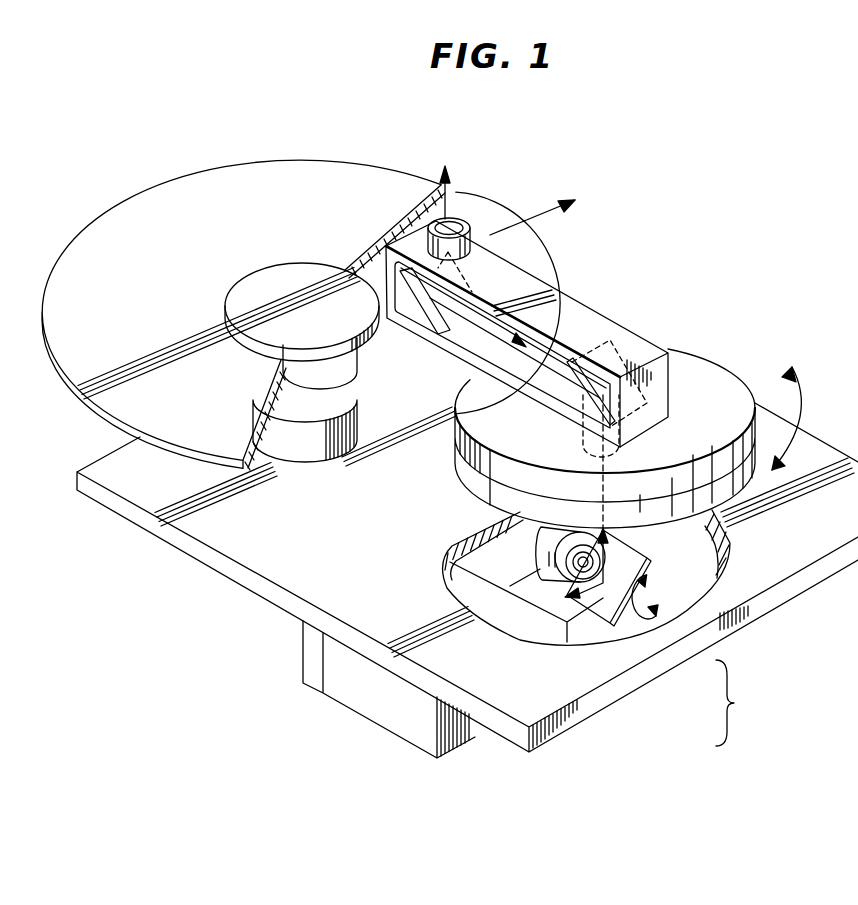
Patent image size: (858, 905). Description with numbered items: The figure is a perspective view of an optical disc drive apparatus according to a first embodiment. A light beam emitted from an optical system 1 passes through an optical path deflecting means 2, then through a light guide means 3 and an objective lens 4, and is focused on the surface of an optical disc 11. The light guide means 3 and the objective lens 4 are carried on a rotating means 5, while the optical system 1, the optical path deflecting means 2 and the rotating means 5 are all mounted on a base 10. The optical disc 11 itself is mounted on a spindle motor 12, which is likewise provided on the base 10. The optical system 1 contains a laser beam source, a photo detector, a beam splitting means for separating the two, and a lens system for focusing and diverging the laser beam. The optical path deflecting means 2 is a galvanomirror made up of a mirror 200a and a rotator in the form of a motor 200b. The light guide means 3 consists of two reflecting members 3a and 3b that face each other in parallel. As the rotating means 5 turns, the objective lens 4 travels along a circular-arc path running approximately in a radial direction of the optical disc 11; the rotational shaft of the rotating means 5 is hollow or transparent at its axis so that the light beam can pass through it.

The optical system 1 is at (380, 710).
The optical path deflecting means 2 is at (601, 636).
The mirror 200a is at (603, 603).
The motor 200b is at (552, 578).
The light guide means 3 is at (536, 347).
The reflecting member 3a is at (613, 347).
The reflecting member 3b is at (417, 322).
The objective lens 4 is at (470, 230).
The rotating means 5 is at (750, 380).
The base 10 is at (223, 562).
The optical disc 11 is at (356, 161).
The spindle motor 12 is at (315, 437).